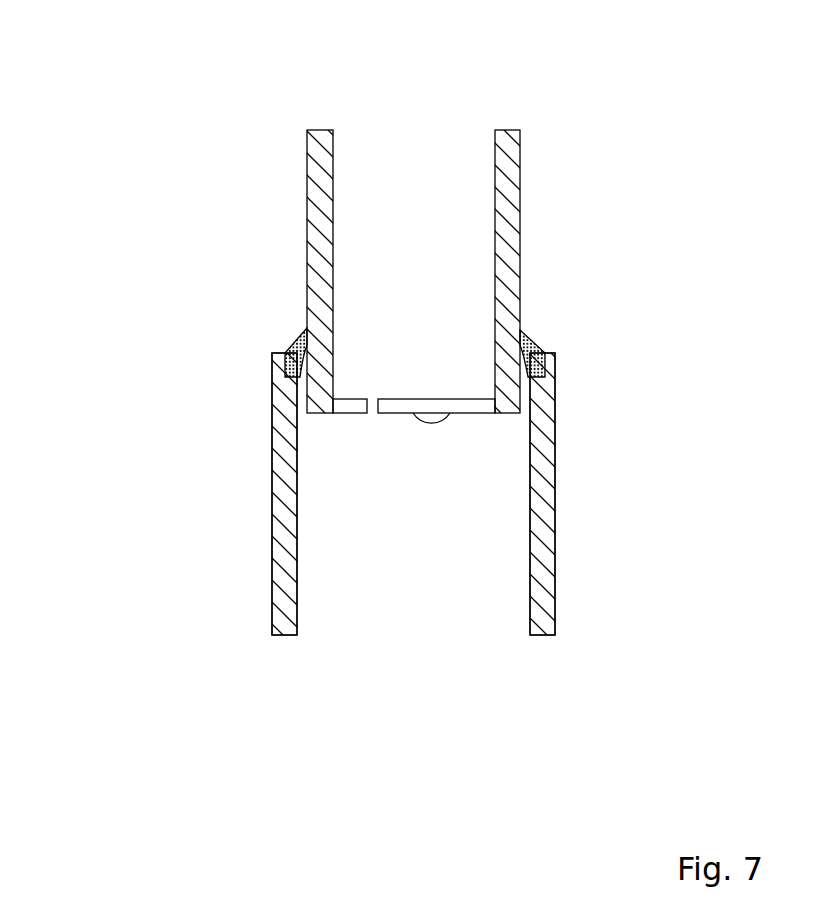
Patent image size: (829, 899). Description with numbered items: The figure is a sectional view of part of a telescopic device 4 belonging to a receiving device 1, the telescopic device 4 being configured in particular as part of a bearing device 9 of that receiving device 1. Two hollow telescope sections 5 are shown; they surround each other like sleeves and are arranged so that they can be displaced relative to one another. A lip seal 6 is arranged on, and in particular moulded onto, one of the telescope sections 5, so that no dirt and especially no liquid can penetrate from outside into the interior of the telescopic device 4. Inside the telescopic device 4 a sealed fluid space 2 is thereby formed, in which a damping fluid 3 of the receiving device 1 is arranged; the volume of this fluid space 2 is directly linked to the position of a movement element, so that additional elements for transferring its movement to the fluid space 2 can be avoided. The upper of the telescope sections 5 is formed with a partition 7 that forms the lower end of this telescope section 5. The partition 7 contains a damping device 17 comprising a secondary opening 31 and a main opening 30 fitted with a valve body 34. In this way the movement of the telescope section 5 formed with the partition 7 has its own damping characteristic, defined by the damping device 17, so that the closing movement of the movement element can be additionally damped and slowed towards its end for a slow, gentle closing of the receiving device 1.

The receiving device 1 is at (200, 74).
The fluid space 2 is at (363, 231).
The damping fluid 3 is at (421, 239).
The telescopic device 4 is at (196, 362).
The telescope section 5 is at (517, 187).
The lip seal 6 is at (296, 350).
The partition 7 is at (485, 402).
The bearing device 9 is at (286, 494).
The damping device 17 is at (419, 358).
The main opening 30 is at (460, 458).
The secondary opening 31 is at (371, 415).
The valve body 34 is at (433, 412).